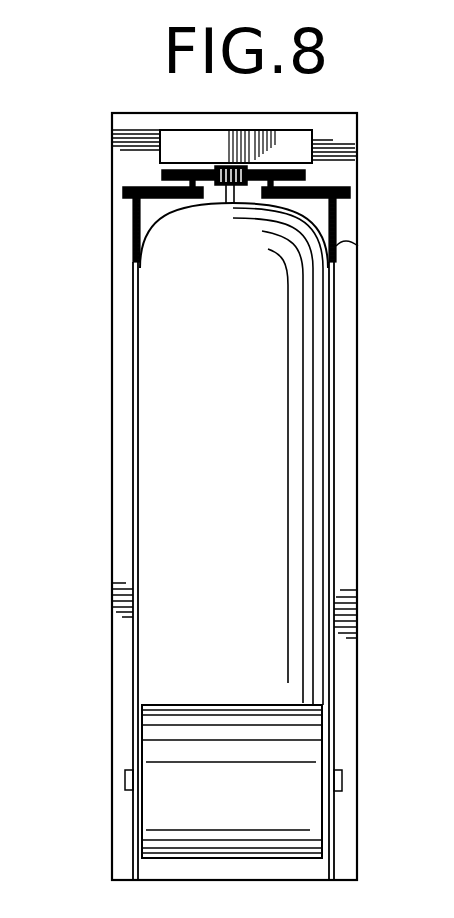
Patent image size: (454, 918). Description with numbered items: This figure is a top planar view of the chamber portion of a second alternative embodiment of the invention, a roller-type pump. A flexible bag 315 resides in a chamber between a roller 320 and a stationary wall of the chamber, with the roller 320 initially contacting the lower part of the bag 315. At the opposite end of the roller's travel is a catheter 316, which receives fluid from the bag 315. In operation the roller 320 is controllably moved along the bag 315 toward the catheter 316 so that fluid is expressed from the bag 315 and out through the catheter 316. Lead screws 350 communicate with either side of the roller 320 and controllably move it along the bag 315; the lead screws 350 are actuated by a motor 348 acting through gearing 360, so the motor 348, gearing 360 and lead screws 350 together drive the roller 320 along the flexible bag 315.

The motor 348 is at (156, 152).
The gearing 360 is at (305, 172).
The lead screws 350 is at (133, 247).
The catheter 316 is at (229, 190).
The flexible bag 315 is at (236, 444).
The roller 320 is at (168, 797).